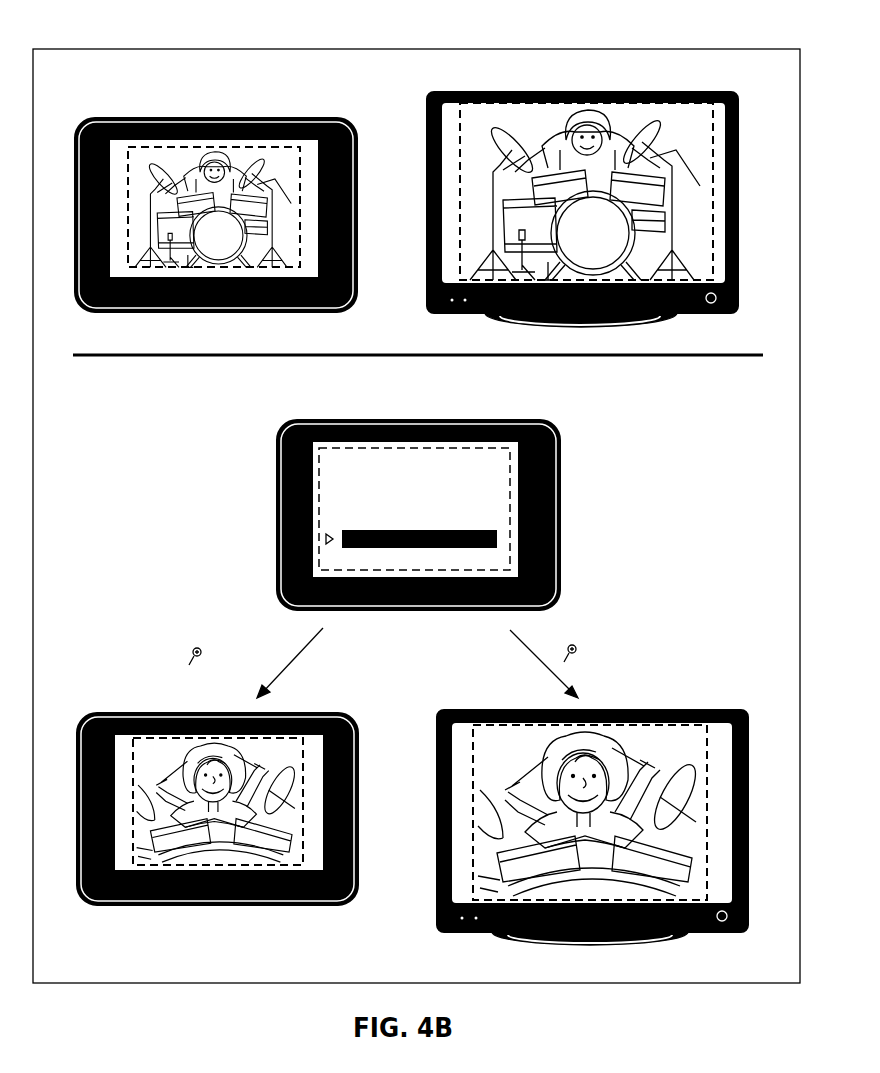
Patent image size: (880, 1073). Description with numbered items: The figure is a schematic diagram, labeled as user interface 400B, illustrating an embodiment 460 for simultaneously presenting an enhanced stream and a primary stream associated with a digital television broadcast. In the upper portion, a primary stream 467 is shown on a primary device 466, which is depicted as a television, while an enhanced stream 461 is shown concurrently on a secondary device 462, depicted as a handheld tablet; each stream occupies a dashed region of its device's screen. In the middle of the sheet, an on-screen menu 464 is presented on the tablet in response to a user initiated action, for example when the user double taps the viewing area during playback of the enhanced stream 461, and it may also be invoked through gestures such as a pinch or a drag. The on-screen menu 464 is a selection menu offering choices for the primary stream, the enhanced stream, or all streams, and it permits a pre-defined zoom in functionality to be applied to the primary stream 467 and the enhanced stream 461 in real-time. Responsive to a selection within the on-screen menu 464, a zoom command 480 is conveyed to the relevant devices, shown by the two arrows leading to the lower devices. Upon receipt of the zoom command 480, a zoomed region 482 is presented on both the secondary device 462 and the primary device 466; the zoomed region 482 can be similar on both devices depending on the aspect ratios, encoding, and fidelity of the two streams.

The user interface 400B is at (416, 491).
The embodiment 460 is at (435, 191).
The enhanced stream 461 is at (300, 190).
The secondary device 462 is at (216, 191).
The on-screen menu 464 is at (510, 460).
The primary device 466 is at (603, 198).
The primary stream 467 is at (713, 176).
The zoom command 480 is at (411, 663).
The region 482 is at (473, 747).